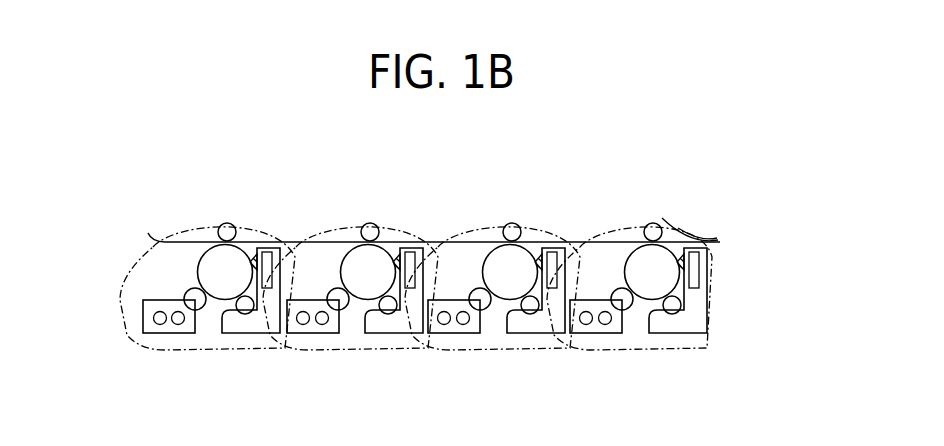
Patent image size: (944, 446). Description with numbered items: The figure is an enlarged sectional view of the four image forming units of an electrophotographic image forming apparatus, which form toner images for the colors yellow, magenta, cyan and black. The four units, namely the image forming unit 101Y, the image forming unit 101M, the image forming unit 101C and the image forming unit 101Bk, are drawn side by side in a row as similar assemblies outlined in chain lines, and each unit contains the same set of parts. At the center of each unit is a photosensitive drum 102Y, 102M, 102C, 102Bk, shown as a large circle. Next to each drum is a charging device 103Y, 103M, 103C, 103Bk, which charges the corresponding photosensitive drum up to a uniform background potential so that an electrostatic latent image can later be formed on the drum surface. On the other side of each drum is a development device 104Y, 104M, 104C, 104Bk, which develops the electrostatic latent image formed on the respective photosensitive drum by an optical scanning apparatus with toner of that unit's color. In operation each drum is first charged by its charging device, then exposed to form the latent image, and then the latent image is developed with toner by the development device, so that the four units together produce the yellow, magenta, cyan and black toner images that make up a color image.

The image forming unit 101Y is at (255, 222).
The photosensitive drum 102Y is at (215, 268).
The charging device 103Y is at (275, 280).
The development device 104Y is at (170, 300).
The image forming unit 101M is at (297, 350).
The photosensitive drum 102M is at (358, 292).
The charging device 103M is at (393, 298).
The development device 104M is at (288, 334).
The image forming unit 101C is at (548, 230).
The photosensitive drum 102C is at (497, 277).
The charging device 103C is at (565, 290).
The development device 104C is at (457, 298).
The image forming unit 101Bk is at (692, 350).
The photosensitive drum 102Bk is at (672, 263).
The charging device 103Bk is at (690, 310).
The development device 104Bk is at (626, 308).